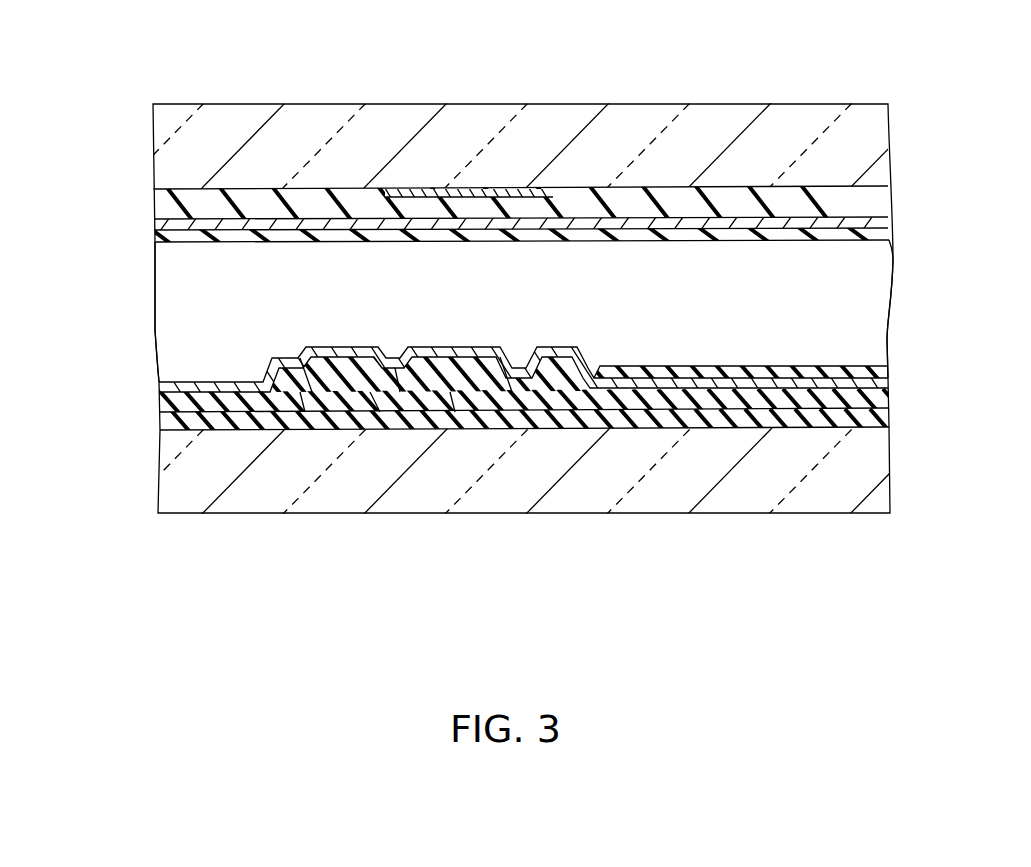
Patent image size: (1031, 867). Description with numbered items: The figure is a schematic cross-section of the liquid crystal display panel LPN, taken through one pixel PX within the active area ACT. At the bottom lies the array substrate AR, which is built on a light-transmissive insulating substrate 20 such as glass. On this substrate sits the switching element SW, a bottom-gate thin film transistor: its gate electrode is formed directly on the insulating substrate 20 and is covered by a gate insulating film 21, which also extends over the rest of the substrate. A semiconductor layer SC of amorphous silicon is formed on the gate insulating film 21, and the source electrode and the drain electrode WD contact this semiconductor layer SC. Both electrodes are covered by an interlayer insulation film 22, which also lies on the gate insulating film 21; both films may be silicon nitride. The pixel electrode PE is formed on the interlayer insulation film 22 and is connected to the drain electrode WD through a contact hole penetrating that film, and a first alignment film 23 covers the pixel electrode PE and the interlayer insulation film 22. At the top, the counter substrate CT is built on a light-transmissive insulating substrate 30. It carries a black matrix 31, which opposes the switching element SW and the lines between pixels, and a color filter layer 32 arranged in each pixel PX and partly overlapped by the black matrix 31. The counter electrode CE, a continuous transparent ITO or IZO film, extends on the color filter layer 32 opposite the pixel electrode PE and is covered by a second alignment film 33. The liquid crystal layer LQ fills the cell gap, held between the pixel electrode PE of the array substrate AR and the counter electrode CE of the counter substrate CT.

The liquid crystal display panel LPN is at (920, 88).
The counter substrate CT is at (543, 146).
The array substrate AR is at (543, 430).
The liquid crystal layer LQ is at (170, 310).
The insulating substrate 30 is at (879, 127).
The black matrix 31 is at (405, 197).
The color filter layer 32 is at (879, 199).
The second alignment film 33 is at (879, 233).
The counter electrode CE is at (615, 218).
The pixel electrode PE is at (692, 367).
The insulating substrate 20 is at (878, 486).
The gate insulating film 21 is at (876, 418).
The interlayer insulation film 22 is at (876, 403).
The first alignment film 23 is at (878, 383).
The drain electrode WD is at (450, 348).
The semiconductor layer SC is at (397, 375).
The switching element SW is at (381, 442).
The pixel PX is at (669, 532).
The active area ACT is at (893, 586).